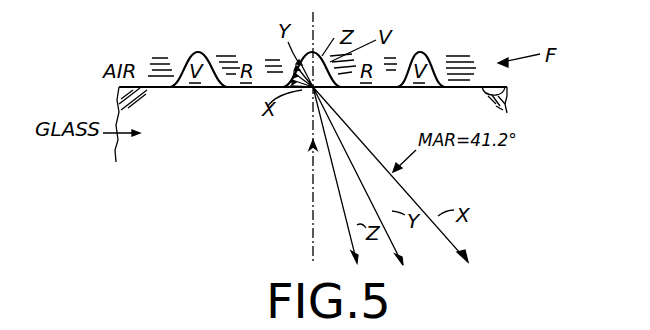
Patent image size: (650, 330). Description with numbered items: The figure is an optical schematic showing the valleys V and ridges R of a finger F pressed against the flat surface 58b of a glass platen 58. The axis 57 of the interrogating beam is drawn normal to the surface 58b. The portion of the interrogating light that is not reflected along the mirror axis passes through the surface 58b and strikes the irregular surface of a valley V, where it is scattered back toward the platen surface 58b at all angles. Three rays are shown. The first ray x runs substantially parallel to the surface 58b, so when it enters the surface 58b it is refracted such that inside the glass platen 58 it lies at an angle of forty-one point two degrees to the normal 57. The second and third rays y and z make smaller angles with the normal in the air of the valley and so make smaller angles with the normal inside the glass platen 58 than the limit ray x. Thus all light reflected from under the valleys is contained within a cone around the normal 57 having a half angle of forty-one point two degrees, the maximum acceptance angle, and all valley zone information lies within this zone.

The axis of the interrogating beam 57 is at (310, 202).
The glass platen 58 is at (194, 145).
The flat surface of the glass platen 58b is at (506, 97).